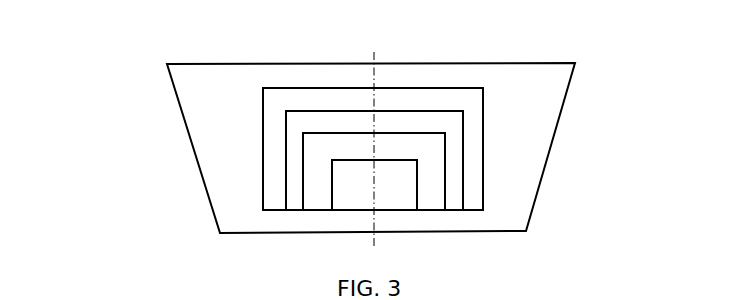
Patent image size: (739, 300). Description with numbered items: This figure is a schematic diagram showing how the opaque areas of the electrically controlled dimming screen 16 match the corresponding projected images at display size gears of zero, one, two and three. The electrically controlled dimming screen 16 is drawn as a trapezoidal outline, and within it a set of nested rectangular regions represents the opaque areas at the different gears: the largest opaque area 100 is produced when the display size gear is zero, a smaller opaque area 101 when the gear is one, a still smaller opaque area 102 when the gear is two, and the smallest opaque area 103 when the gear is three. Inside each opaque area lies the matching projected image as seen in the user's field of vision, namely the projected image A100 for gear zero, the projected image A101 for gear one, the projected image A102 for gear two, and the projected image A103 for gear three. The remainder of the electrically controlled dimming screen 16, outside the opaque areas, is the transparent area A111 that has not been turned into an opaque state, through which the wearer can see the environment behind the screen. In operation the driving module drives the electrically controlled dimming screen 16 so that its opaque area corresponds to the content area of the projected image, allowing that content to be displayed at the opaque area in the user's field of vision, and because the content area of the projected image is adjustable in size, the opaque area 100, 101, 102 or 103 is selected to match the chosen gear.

The electrically controlled dimming screen 16 is at (331, 63).
The opaque area 100 is at (263, 104).
The opaque area 101 is at (284, 137).
The opaque area 102 is at (303, 166).
The opaque area 103 is at (332, 188).
The transparent area A111 is at (549, 87).
The projected image A100 is at (472, 125).
The projected image A101 is at (453, 138).
The projected image A102 is at (427, 151).
The projected image A103 is at (405, 171).